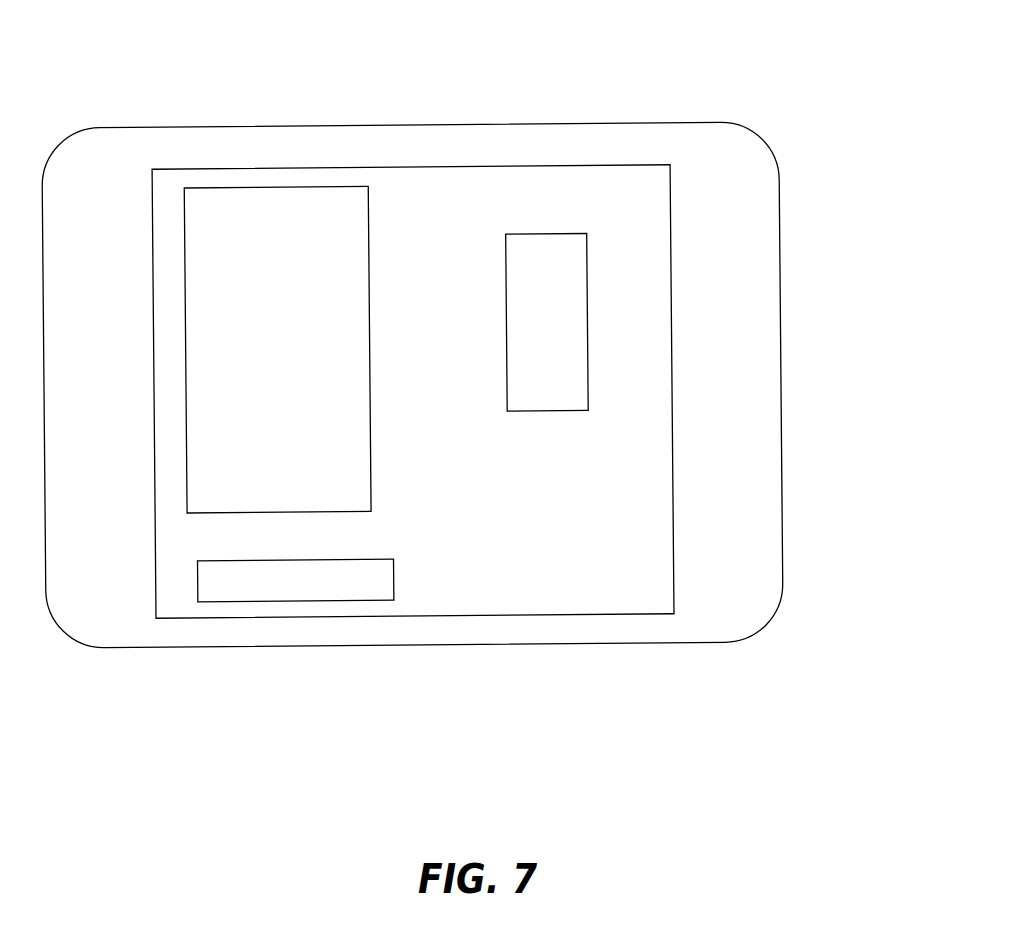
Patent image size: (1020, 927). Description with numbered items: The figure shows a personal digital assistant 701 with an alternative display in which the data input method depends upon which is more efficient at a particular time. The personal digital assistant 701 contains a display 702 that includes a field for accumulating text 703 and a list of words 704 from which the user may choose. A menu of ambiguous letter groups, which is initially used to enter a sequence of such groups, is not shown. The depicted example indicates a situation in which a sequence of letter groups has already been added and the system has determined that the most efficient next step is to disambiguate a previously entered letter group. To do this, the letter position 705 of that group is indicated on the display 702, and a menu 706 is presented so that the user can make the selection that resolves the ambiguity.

The personal digital assistant 701 is at (783, 480).
The display 702 is at (597, 612).
The field for accumulating text 703 is at (258, 601).
The list of words 704 is at (300, 187).
The letter position 705 is at (439, 258).
The menu 706 is at (588, 283).